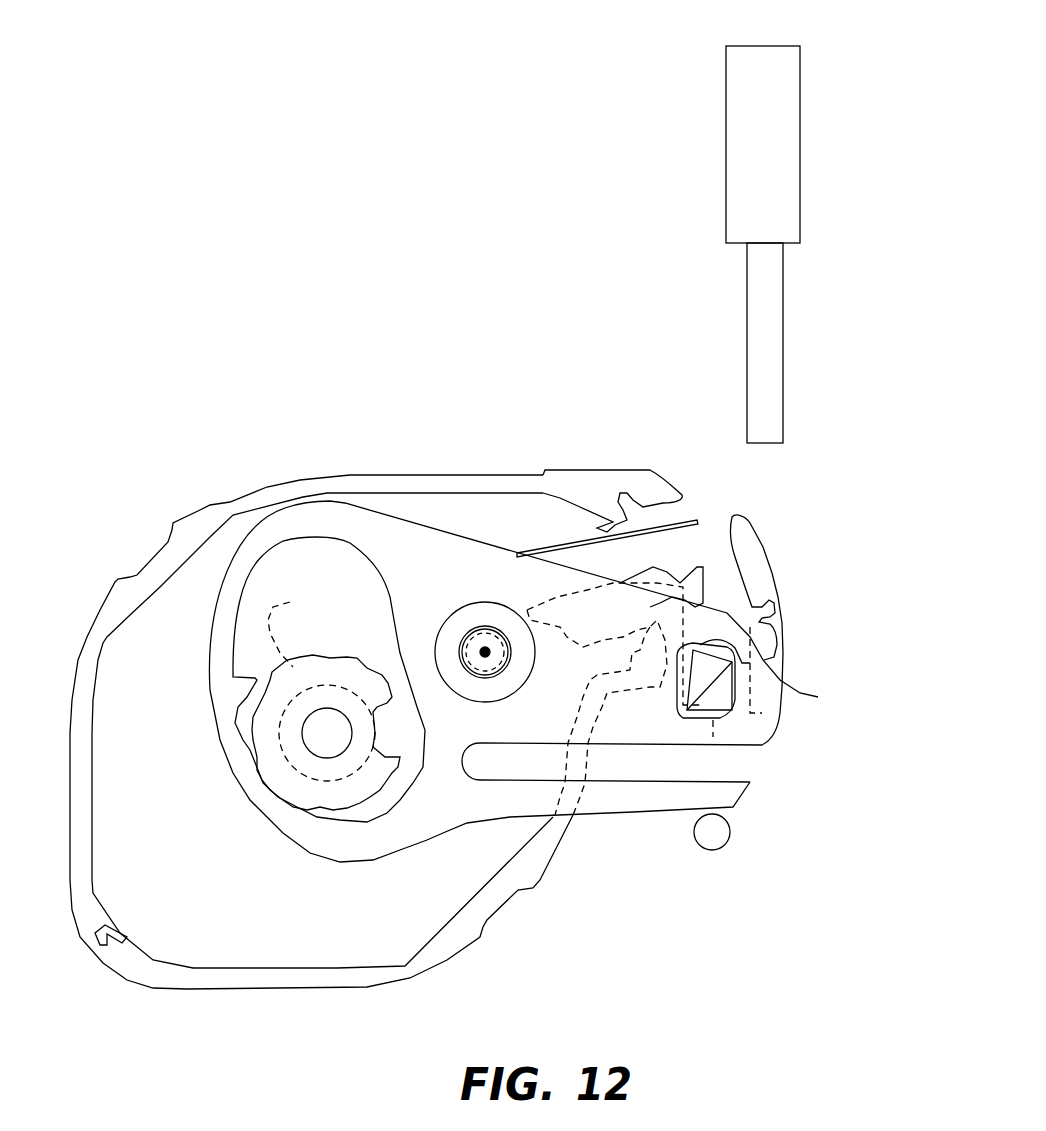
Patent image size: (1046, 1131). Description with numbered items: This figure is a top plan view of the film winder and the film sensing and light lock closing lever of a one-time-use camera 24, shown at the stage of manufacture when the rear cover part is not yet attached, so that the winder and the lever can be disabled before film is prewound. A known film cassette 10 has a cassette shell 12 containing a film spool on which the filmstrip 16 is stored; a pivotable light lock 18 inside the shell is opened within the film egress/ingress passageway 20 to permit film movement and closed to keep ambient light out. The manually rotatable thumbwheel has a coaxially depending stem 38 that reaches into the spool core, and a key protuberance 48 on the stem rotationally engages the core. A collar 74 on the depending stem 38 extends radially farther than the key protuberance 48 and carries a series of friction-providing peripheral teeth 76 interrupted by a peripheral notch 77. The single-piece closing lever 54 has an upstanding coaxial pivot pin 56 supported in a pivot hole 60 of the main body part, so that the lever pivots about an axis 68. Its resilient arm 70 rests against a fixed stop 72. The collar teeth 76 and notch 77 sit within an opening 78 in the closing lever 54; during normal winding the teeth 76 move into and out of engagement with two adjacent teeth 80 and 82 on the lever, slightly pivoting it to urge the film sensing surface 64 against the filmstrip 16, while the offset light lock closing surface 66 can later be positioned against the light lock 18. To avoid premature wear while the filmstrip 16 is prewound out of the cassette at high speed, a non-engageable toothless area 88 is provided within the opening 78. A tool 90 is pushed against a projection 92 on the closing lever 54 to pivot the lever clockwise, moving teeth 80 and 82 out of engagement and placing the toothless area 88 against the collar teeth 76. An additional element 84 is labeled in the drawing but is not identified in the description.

The film cassette 10 is at (468, 960).
The cassette shell 12 is at (382, 988).
The filmstrip 16 is at (697, 515).
The light lock 18 is at (620, 585).
The film egress/ingress passageway 20 is at (658, 540).
The one-time-use camera 24 is at (151, 507).
The depending stem 38 is at (310, 803).
The key protuberance 48 is at (295, 631).
The closing lever 54 is at (335, 500).
The pivot pin 56 is at (470, 640).
The pivot hole 60 is at (487, 629).
The film sensing surface 64 is at (732, 517).
The light lock closing surface 66 is at (765, 679).
The axis 68 is at (488, 655).
The resilient arm 70 is at (627, 812).
The fixed stop 72 is at (730, 840).
The collar 74 is at (352, 655).
The peripheral teeth 76 is at (380, 792).
The peripheral notch 77 is at (387, 703).
The opening 78 is at (282, 557).
The tooth 80 is at (242, 730).
The tooth 82 is at (262, 773).
The spring end 84 is at (255, 680).
The toothless area 88 is at (340, 820).
The tool 90 is at (767, 53).
The projection 92 is at (769, 600).